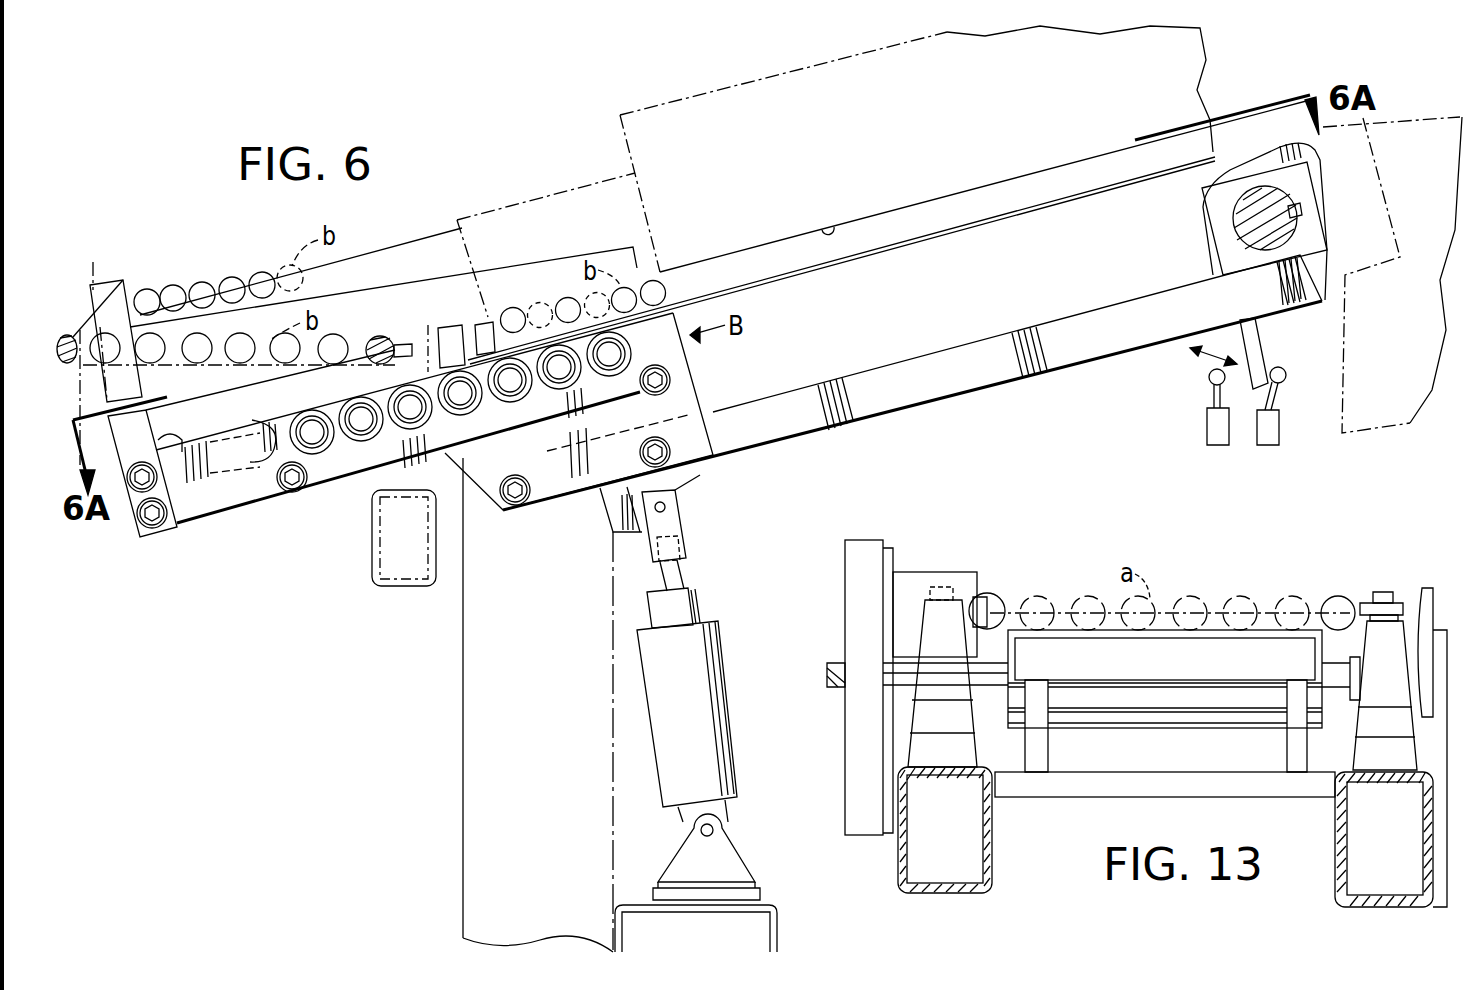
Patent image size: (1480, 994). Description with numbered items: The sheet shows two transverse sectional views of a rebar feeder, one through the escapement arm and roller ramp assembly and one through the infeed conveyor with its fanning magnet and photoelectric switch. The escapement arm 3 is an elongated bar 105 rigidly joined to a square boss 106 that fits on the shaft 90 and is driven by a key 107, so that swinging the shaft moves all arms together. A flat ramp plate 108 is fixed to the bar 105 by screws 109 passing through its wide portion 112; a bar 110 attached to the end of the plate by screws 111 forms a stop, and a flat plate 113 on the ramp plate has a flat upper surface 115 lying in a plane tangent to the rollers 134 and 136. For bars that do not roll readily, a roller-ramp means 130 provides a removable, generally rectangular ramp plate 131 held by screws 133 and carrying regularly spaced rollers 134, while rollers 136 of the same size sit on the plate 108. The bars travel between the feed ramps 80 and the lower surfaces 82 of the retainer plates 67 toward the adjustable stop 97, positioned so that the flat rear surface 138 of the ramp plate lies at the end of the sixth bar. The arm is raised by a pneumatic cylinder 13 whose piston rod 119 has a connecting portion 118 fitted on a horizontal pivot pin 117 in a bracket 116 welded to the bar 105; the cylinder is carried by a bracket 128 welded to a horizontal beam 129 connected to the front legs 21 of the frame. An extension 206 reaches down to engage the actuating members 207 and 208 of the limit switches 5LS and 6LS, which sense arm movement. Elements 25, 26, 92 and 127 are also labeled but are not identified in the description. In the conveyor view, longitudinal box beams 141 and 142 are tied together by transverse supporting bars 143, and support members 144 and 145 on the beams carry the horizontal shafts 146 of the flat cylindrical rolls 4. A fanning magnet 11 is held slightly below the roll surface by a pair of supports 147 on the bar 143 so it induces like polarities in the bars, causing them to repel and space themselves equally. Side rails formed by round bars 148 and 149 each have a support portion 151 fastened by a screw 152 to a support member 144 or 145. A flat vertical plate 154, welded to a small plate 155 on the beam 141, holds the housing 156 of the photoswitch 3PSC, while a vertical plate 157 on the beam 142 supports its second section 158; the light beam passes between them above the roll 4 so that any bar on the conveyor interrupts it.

In FIG. 6, the elongated bar 105 is at (946, 350).
In FIG. 6, the lower surface of retainer plate 82 is at (836, 226).
In FIG. 6, the retainer plate 67 is at (1195, 65).
In FIG. 6, the frame 26 is at (1388, 118).
In FIG. 6, the feed ramp 80 is at (1217, 153).
In FIG. 6, the boss 106 is at (1233, 252).
In FIG. 6, the shaft 90 is at (1240, 222).
In FIG. 6, the key 107 is at (1303, 211).
In FIG. 6, the frame portion 25 is at (1353, 334).
In FIG. 6, the extension 206 is at (1255, 354).
In FIG. 6, the actuating member 207 is at (1209, 380).
In FIG. 6, the actuating member 208 is at (1286, 378).
In FIG. 6, the limit switch 5LS is at (1207, 428).
In FIG. 6, the limit switch 6LS is at (1265, 440).
In FIG. 6, the side rail bar 148 is at (123, 283).
In FIG. 13, the side rail bar 148 is at (995, 600).
In FIG. 6, the stop bar 110 is at (100, 250).
In FIG. 6, the cylindrical roll 4 is at (80, 390).
In FIG. 13, the cylindrical roll 4 is at (1212, 733).
In FIG. 6, the side rail bar 149 is at (382, 337).
In FIG. 13, the side rail bar 149 is at (1338, 600).
In FIG. 6, the adjustable stop 97 is at (483, 323).
In FIG. 6, the roller 136 is at (422, 390).
In FIG. 6, the flat rear surface 138 is at (688, 365).
In FIG. 6, the roller-ramp means 130 is at (307, 493).
In FIG. 6, the wide portion 112 is at (673, 407).
In FIG. 6, the ramp plate 131 is at (477, 458).
In FIG. 6, the roller 134 is at (318, 445).
In FIG. 6, the screw 133 is at (290, 495).
In FIG. 6, the screw 109 is at (512, 505).
In FIG. 6, the flat upper surface 115 is at (196, 451).
In FIG. 6, the flat plate 113 is at (205, 480).
In FIG. 6, the screw 111 is at (186, 522).
In FIG. 6, the ramp plate 108 is at (472, 460).
In FIG. 6, the bracket 92 is at (440, 590).
In FIG. 6, the front leg 21 is at (463, 630).
In FIG. 6, the escapement arm 3 is at (570, 497).
In FIG. 6, the horizontal pivot pin 117 is at (688, 530).
In FIG. 6, the bracket 116 is at (665, 509).
In FIG. 6, the connecting portion 118 is at (655, 553).
In FIG. 6, the piston rod 119 is at (683, 572).
In FIG. 6, the pneumatic cylinder 13 is at (708, 682).
In FIG. 6, the pivot pin 127 is at (700, 830).
In FIG. 6, the bracket 128 is at (718, 852).
In FIG. 6, the horizontal beam 129 is at (777, 920).
In FIG. 13, the flat vertical plate 154 is at (845, 740).
In FIG. 13, the small plate 155 is at (890, 793).
In FIG. 13, the housing 156 is at (913, 572).
In FIG. 13, the photoswitch 3PSC is at (975, 572).
In FIG. 13, the screw 152 is at (933, 587).
In FIG. 13, the supporting member 144 is at (955, 725).
In FIG. 13, the support portion 151 is at (1412, 595).
In FIG. 13, the support member 145 is at (1378, 720).
In FIG. 13, the second section 158 is at (1418, 665).
In FIG. 13, the horizontal shaft 146 is at (836, 663).
In FIG. 13, the fanning magnet 11 is at (1112, 668).
In FIG. 13, the support 147 is at (1295, 752).
In FIG. 13, the transverse supporting bar 143 is at (1200, 785).
In FIG. 13, the longitudinal box beam 141 is at (898, 875).
In FIG. 13, the longitudinal box beam 142 is at (1340, 882).
In FIG. 13, the vertical plate 157 is at (1433, 822).